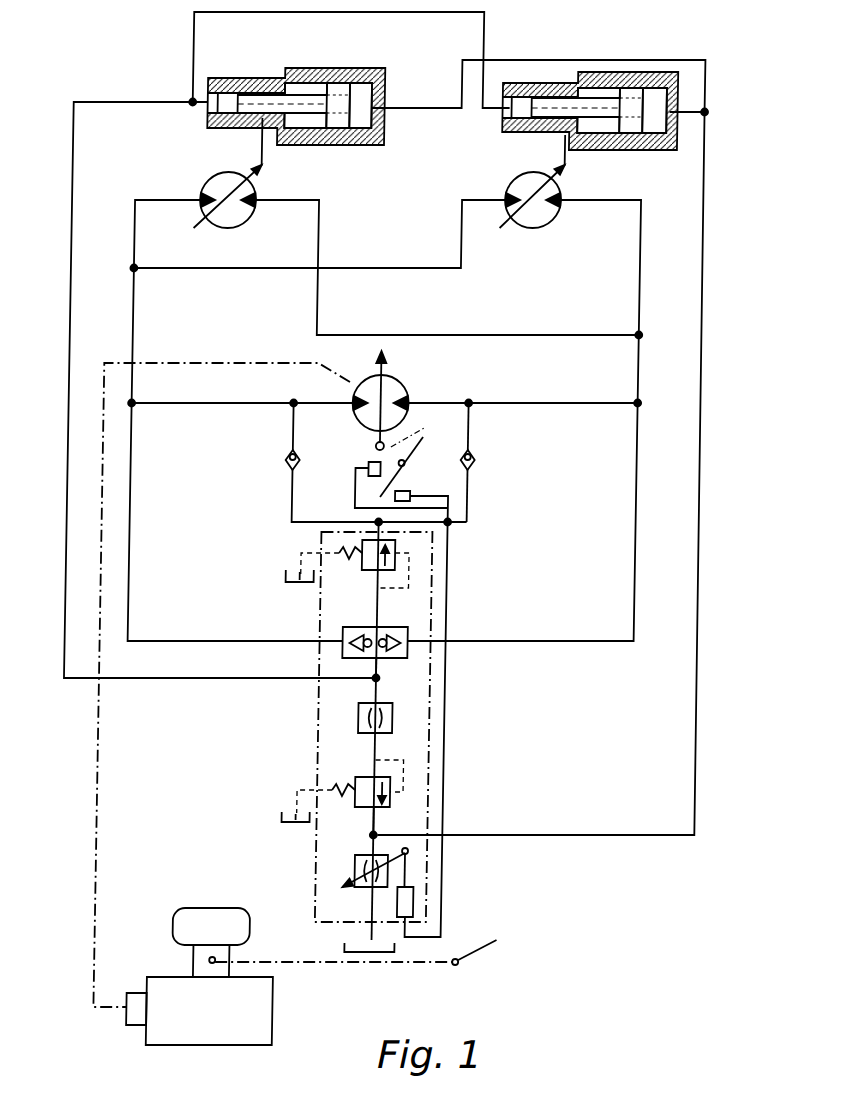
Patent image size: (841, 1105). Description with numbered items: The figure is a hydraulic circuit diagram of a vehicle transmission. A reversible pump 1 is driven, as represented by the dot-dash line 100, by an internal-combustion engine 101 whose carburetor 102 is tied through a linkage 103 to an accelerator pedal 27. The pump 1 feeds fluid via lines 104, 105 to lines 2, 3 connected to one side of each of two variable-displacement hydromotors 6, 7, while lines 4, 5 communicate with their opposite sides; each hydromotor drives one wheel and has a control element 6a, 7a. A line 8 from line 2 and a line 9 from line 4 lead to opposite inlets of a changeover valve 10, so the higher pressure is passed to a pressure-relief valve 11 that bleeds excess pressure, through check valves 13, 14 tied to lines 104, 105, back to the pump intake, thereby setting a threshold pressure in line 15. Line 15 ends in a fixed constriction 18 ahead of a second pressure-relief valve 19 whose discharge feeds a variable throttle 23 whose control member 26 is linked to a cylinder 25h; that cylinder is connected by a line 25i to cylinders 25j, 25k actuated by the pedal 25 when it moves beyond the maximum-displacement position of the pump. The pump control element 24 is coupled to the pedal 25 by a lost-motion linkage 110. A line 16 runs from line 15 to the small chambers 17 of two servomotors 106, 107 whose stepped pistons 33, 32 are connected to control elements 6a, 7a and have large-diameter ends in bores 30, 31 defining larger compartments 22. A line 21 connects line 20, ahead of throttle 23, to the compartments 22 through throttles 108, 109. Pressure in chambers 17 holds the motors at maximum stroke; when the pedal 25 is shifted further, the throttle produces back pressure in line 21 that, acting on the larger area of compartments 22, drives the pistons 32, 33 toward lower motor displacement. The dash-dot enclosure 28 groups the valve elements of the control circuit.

The pump 1 is at (401, 385).
The line 2 is at (638, 370).
The line 3 is at (545, 335).
The line 4 is at (128, 305).
The line 5 is at (402, 268).
The hydromotor 6 is at (512, 180).
The control element 6a is at (498, 229).
The hydromotor 7 is at (210, 176).
The control element 7a is at (193, 229).
The line 8 is at (637, 535).
The line 9 is at (131, 521).
The changeover valve 10 is at (397, 627).
The pressure-relief valve 11 is at (366, 571).
The check valve 13 is at (475, 460).
The check valve 14 is at (286, 459).
The line 15 is at (380, 661).
The line 16 is at (64, 480).
The small cross-section chamber 17 is at (222, 93).
The fixed cross-section constriction 18 is at (361, 716).
The pressure-relief valve 19 is at (362, 777).
The line 20 is at (381, 814).
The line 21 is at (650, 837).
The compartment 22 is at (352, 83).
The variable cross-section throttle 23 is at (358, 855).
The control element 24 is at (374, 446).
The pedal 25 is at (424, 440).
The cylinder 25h is at (420, 898).
The line 25i is at (449, 538).
The cylinder 25j is at (404, 491).
The cylinder 25k is at (367, 469).
The control member 26 is at (347, 885).
The accelerator pedal 27 is at (497, 944).
The valve block 28 is at (322, 619).
The cylinder bore 30 is at (303, 88).
The cylinder bore 31 is at (594, 88).
The piston 32 is at (340, 130).
The piston 33 is at (624, 133).
The dot-dash line 100 is at (96, 790).
The internal-combustion engine 101 is at (248, 1045).
The carburetor 102 is at (202, 908).
The linkage 103 is at (348, 963).
The line 104 is at (548, 403).
The line 105 is at (203, 405).
The servomotor 106 is at (662, 152).
The servomotor 107 is at (366, 150).
The throttle 108 is at (666, 113).
The throttle 109 is at (368, 110).
The lost-motion linkage 110 is at (428, 430).